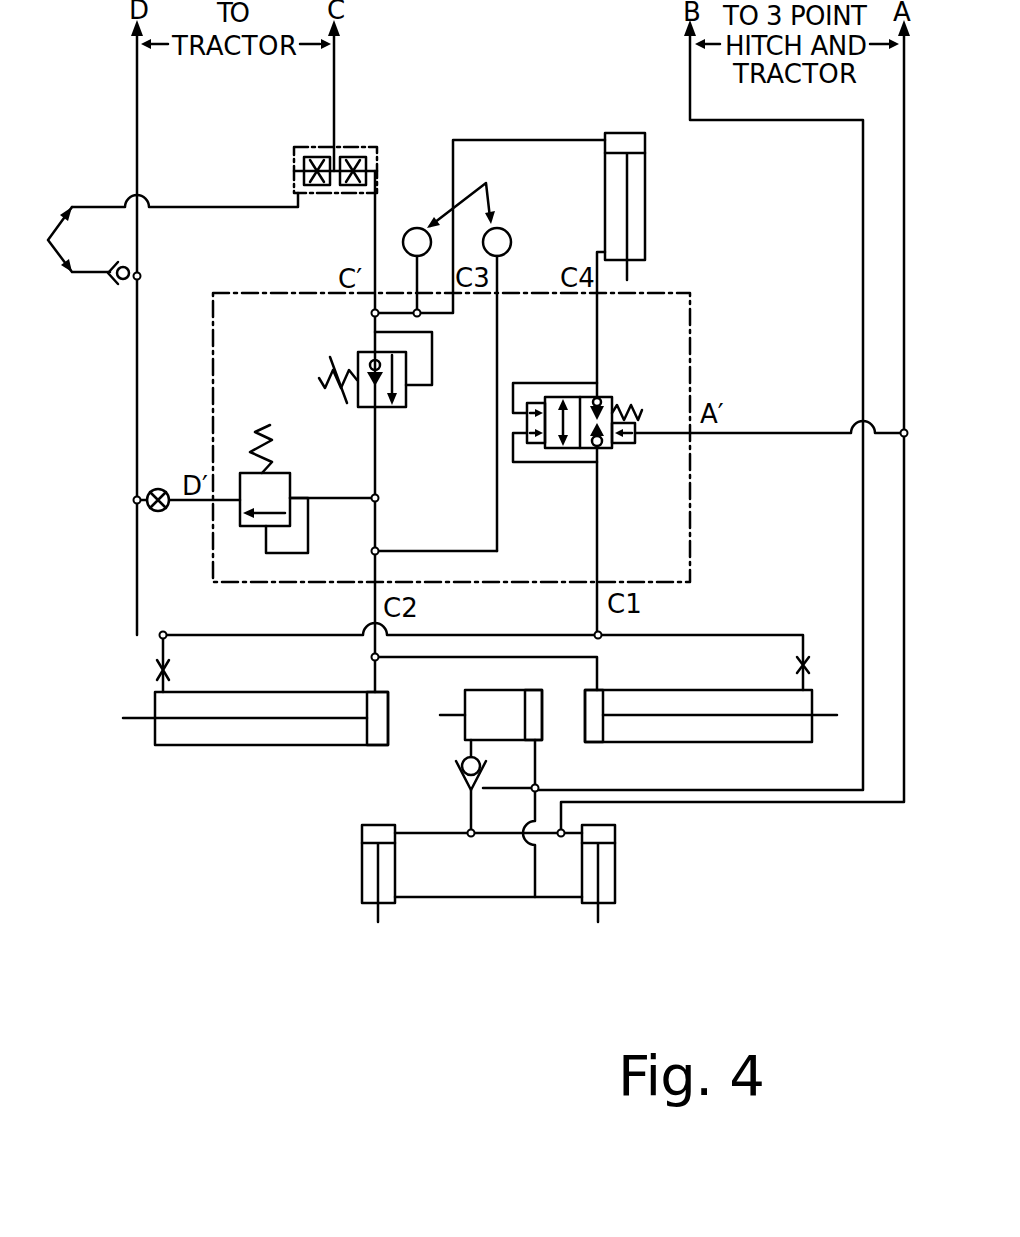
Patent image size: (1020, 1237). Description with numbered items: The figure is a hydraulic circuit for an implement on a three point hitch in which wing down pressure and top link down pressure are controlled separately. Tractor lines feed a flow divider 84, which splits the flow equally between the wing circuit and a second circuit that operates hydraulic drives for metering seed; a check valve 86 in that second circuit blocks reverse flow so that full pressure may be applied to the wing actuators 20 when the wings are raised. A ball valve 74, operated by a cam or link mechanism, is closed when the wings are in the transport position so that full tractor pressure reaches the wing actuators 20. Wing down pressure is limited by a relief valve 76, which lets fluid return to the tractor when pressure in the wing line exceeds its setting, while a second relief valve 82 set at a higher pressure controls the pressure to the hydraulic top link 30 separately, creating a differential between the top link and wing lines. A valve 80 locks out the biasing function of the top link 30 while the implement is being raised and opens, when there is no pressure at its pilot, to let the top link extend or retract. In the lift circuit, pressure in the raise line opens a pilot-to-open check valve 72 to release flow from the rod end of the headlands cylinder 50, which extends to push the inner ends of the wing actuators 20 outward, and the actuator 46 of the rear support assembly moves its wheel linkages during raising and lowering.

The wing actuators 20 is at (165, 745).
The hydraulic top link 30 is at (645, 222).
The actuator 46 is at (362, 905).
The headlands cylinder 50 is at (465, 722).
The pilot-to-open check valve 72 is at (462, 790).
The ball valve 74 is at (157, 512).
The relief valve 76 is at (245, 528).
The valve 80 is at (605, 448).
The second relief valve 82 is at (383, 407).
The flow divider 84 is at (335, 193).
The check valve 86 is at (120, 283).